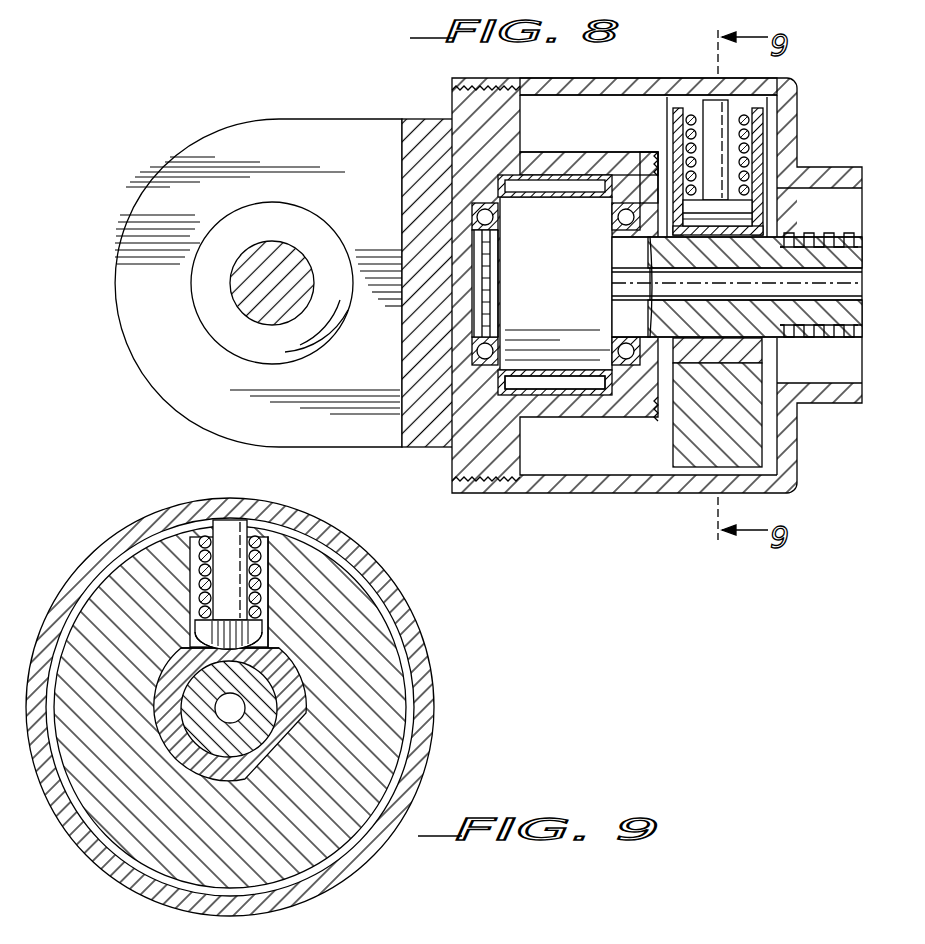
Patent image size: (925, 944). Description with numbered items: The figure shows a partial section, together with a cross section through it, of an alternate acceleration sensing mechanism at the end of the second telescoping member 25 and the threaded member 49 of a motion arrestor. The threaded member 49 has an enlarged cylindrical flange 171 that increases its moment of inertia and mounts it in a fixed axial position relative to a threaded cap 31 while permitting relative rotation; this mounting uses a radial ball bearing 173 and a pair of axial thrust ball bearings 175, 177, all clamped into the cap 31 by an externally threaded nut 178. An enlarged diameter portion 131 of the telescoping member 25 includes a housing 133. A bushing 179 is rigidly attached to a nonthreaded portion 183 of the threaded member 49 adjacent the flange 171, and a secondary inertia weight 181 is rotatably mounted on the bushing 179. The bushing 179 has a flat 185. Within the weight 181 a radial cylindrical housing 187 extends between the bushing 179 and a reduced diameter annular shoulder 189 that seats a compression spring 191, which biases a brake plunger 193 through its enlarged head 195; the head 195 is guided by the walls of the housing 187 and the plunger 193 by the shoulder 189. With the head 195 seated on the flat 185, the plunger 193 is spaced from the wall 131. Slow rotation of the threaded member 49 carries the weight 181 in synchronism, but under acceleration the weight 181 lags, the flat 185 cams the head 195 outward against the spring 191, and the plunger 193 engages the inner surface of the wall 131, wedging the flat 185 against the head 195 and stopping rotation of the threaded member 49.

In FIG. 8, the second telescoping member 25 is at (797, 120).
In FIG. 8, the threaded cap 31 is at (452, 108).
In FIG. 8, the threaded member 49 is at (808, 250).
In FIG. 9, the threaded member 49 is at (252, 752).
In FIG. 8, the enlarged diameter portion 131 is at (560, 78).
In FIG. 9, the enlarged diameter portion 131 is at (430, 700).
In FIG. 8, the housing 133 is at (600, 95).
In FIG. 8, the enlarged cylindrical flange 171 is at (565, 284).
In FIG. 8, the radial ball bearing 173 is at (543, 389).
In FIG. 8, the axial thrust ball bearing 175 is at (490, 350).
In FIG. 8, the axial thrust ball bearing 177 is at (612, 351).
In FIG. 8, the externally threaded nut 178 is at (638, 176).
In FIG. 8, the bushing 179 is at (697, 355).
In FIG. 9, the bushing 179 is at (245, 776).
In FIG. 8, the secondary inertia weight 181 is at (695, 444).
In FIG. 9, the secondary inertia weight 181 is at (382, 762).
In FIG. 8, the nonthreaded portion 183 is at (735, 330).
In FIG. 9, the nonthreaded portion 183 is at (262, 708).
In FIG. 9, the flat 185 is at (264, 632).
In FIG. 9, the radial cylindrical housing 187 is at (256, 597).
In FIG. 9, the reduced diameter annular shoulder 189 is at (202, 530).
In FIG. 8, the compression spring 191 is at (746, 152).
In FIG. 9, the compression spring 191 is at (207, 578).
In FIG. 8, the brake plunger 193 is at (715, 118).
In FIG. 9, the brake plunger 193 is at (216, 578).
In FIG. 8, the enlarged head 195 is at (728, 206).
In FIG. 9, the enlarged head 195 is at (210, 631).